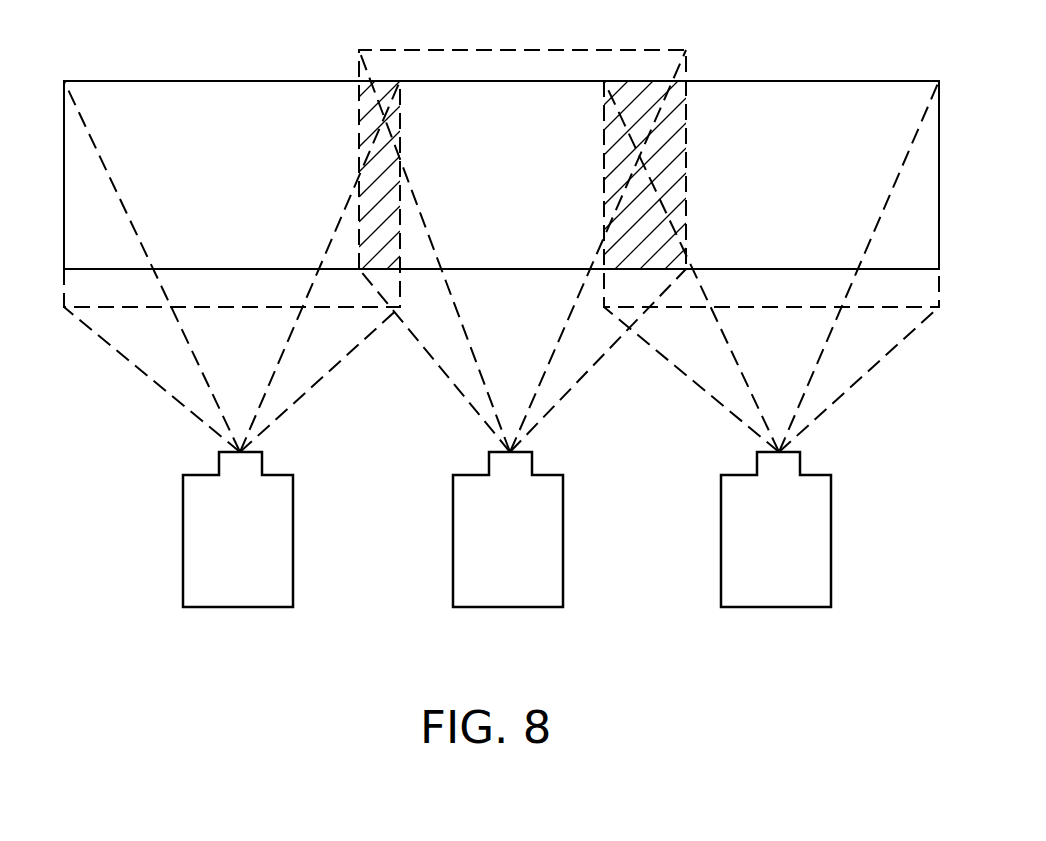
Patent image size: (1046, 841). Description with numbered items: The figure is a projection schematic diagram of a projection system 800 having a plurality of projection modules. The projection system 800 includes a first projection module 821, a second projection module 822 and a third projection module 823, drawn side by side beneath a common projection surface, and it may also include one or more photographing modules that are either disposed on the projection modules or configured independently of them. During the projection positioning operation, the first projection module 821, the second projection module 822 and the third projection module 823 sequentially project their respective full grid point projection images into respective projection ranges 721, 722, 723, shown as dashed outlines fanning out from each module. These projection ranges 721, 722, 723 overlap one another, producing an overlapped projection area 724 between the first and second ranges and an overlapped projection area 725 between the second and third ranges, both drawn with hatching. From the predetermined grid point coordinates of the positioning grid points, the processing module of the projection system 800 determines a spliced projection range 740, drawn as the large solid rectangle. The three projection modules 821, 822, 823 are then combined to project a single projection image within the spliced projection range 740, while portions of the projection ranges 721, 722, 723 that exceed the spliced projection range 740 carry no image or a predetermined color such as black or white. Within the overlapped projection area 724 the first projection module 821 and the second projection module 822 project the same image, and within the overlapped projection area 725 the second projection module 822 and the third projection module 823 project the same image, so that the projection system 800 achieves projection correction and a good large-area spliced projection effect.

The projection system 800 is at (921, 676).
The spliced projection range 740 is at (842, 81).
The projection range 721 is at (118, 307).
The projection range 722 is at (686, 70).
The projection range 723 is at (887, 307).
The overlapped projection area 724 is at (400, 129).
The overlapped projection area 725 is at (686, 138).
The first projection module 821 is at (237, 607).
The second projection module 822 is at (507, 607).
The third projection module 823 is at (776, 607).